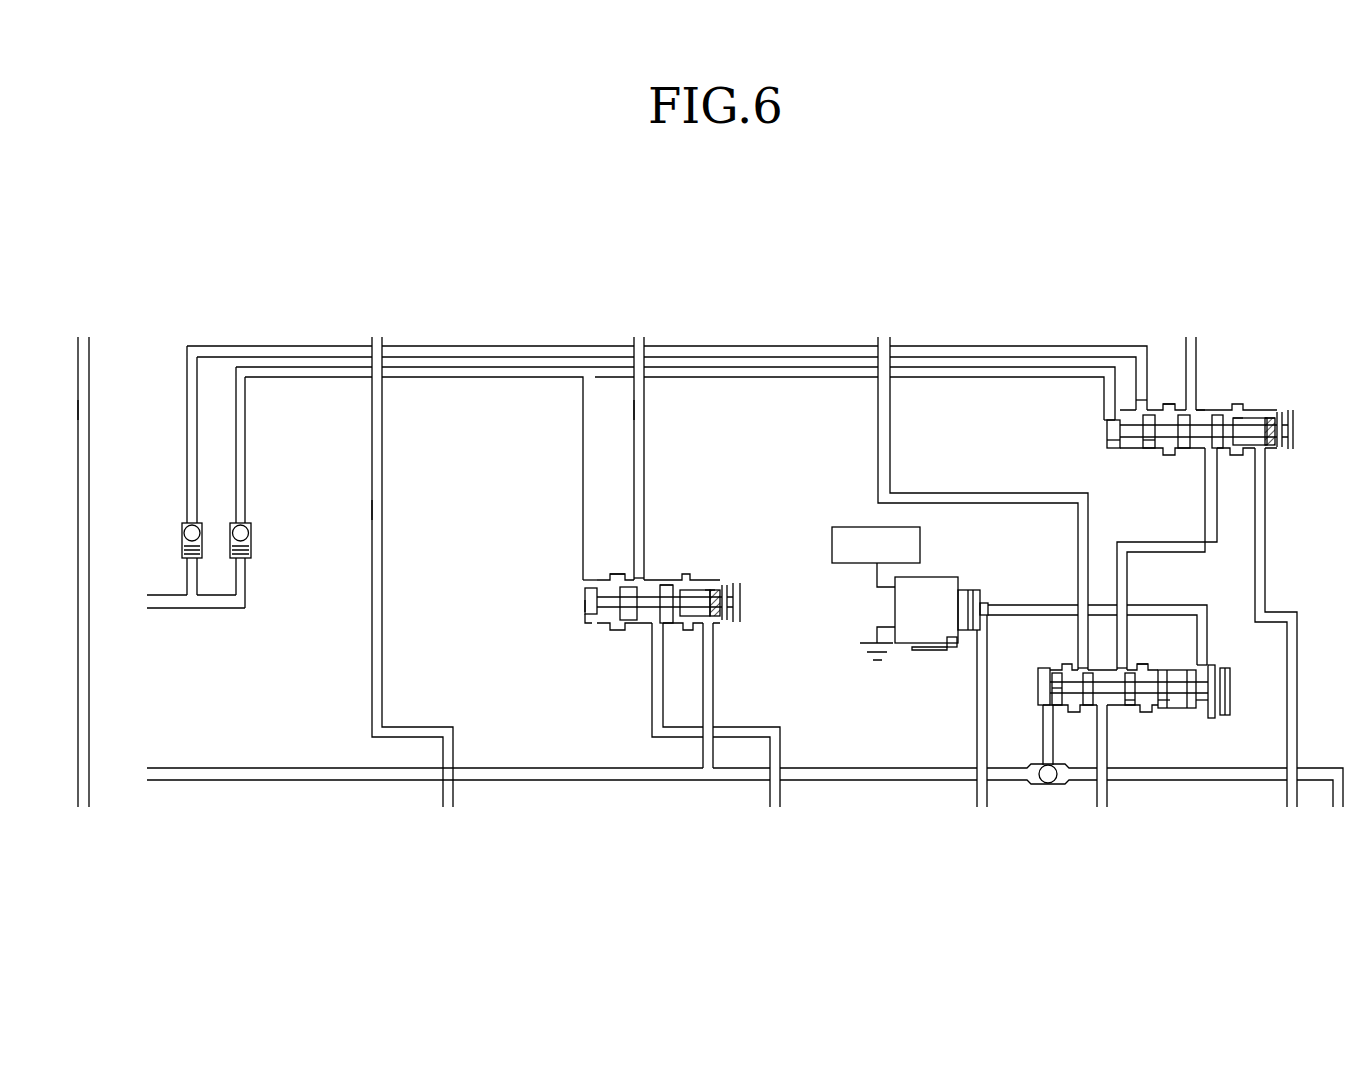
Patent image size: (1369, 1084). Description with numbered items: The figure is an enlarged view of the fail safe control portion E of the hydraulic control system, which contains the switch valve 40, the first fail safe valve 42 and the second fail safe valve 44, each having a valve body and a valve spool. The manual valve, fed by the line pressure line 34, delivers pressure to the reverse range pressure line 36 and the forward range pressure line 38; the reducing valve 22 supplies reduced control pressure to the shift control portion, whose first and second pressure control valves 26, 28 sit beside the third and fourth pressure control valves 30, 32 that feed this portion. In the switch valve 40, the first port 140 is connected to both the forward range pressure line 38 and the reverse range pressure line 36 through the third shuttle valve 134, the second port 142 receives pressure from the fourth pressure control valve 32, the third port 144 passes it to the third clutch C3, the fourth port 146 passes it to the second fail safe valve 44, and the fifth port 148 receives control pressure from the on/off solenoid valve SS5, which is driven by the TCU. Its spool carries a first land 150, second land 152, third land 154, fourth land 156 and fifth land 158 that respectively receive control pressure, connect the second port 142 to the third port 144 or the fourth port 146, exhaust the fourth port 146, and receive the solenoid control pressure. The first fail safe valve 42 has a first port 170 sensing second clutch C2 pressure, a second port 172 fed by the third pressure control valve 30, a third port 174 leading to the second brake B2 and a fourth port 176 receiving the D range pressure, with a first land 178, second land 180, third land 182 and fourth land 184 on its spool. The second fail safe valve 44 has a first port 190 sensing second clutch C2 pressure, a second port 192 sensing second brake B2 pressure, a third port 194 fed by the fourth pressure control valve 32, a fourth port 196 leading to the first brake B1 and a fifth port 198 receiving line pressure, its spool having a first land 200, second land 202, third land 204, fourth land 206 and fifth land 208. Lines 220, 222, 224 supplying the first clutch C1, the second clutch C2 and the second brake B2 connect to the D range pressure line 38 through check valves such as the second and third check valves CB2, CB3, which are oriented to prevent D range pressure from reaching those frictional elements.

The reducing valve 22 is at (982, 812).
The first pressure control valve 26 is at (83, 812).
The second pressure control valve 28 is at (448, 812).
The third pressure control valve 30 is at (775, 812).
The fourth pressure control valve 32 is at (1102, 812).
The line pressure line 34 is at (1292, 812).
The reverse range pressure line 36 is at (1338, 812).
The forward range pressure line 38 is at (143, 602).
The switch valve 40 is at (1166, 696).
The first fail safe valve 42 is at (656, 580).
The second fail safe valve 44 is at (1207, 405).
The third shuttle valve 134 is at (1048, 783).
The first port of switch valve 140 is at (1046, 708).
The second port of switch valve 142 is at (1107, 785).
The third port of switch valve 144 is at (1078, 668).
The fourth port of switch valve 146 is at (1133, 668).
The fifth port of switch valve 148 is at (1212, 668).
The first land of switch valve spool 150 is at (1052, 688).
The second land of switch valve spool 152 is at (1095, 668).
The third land of switch valve spool 154 is at (1132, 702).
The fourth land of switch valve spool 156 is at (1182, 702).
The fifth land of switch valve spool 158 is at (1216, 702).
The first port of first fail safe valve 170 is at (586, 584).
The second port of first fail safe valve 172 is at (656, 640).
The third port of first fail safe valve 174 is at (646, 580).
The fourth port of first fail safe valve 176 is at (710, 638).
The first land of first fail safe valve spool 178 is at (584, 604).
The second land of first fail safe valve spool 180 is at (616, 580).
The third land of first fail safe valve spool 182 is at (664, 585).
The fourth land of first fail safe valve spool 184 is at (706, 590).
The first port of second fail safe valve 190 is at (1106, 422).
The second port of second fail safe valve 192 is at (1140, 405).
The third port of second fail safe valve 194 is at (1211, 465).
The fourth port of second fail safe valve 196 is at (1200, 410).
The fifth port of second fail safe valve 198 is at (1262, 462).
The first land of second fail safe valve spool 200 is at (1109, 440).
The second land of second fail safe valve spool 202 is at (1147, 452).
The third land of second fail safe valve spool 204 is at (1180, 418).
The fourth land of second fail safe valve spool 206 is at (1226, 418).
The fifth land of second fail safe valve spool 208 is at (1276, 418).
The line 220 is at (90, 418).
The line 222 is at (382, 515).
The line 224 is at (644, 418).
The first clutch C1 is at (83, 335).
The second clutch C2 is at (377, 335).
The third clutch C3 is at (884, 335).
The first brake B1 is at (1191, 335).
The second brake B2 is at (639, 335).
The second check valve CB2 is at (250, 525).
The third check valve CB3 is at (184, 525).
The on/off solenoid valve SS5 is at (890, 607).
The transmission control unit TCU is at (876, 557).
The fail safe control portion E is at (985, 285).